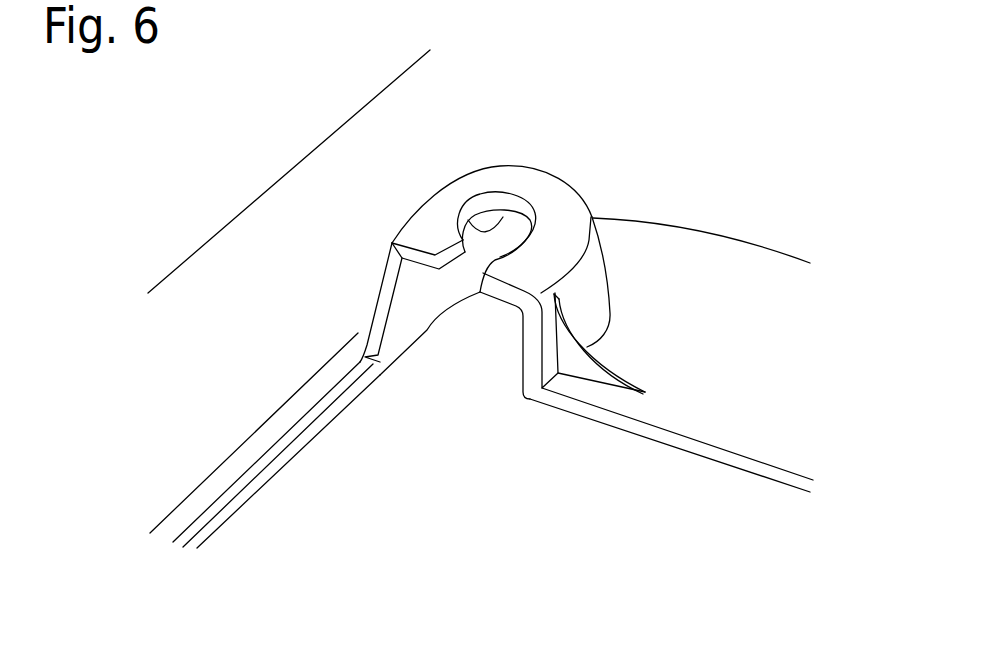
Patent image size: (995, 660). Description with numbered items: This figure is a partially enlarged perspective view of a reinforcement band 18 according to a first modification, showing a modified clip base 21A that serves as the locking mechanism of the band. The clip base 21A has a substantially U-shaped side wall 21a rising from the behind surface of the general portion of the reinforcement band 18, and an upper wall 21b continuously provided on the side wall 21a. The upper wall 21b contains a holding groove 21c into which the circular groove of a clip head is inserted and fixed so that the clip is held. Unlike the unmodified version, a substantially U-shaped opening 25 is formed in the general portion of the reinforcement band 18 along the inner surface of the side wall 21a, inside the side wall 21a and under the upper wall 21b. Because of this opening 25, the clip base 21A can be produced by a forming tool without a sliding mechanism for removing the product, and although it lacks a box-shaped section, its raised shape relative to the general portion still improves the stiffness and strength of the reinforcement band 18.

The reinforcement band 18 is at (728, 408).
The clip base 21A is at (568, 182).
The side wall 21a is at (604, 272).
The upper wall 21b is at (527, 265).
The holding groove 21c is at (496, 225).
The opening 25 is at (428, 333).